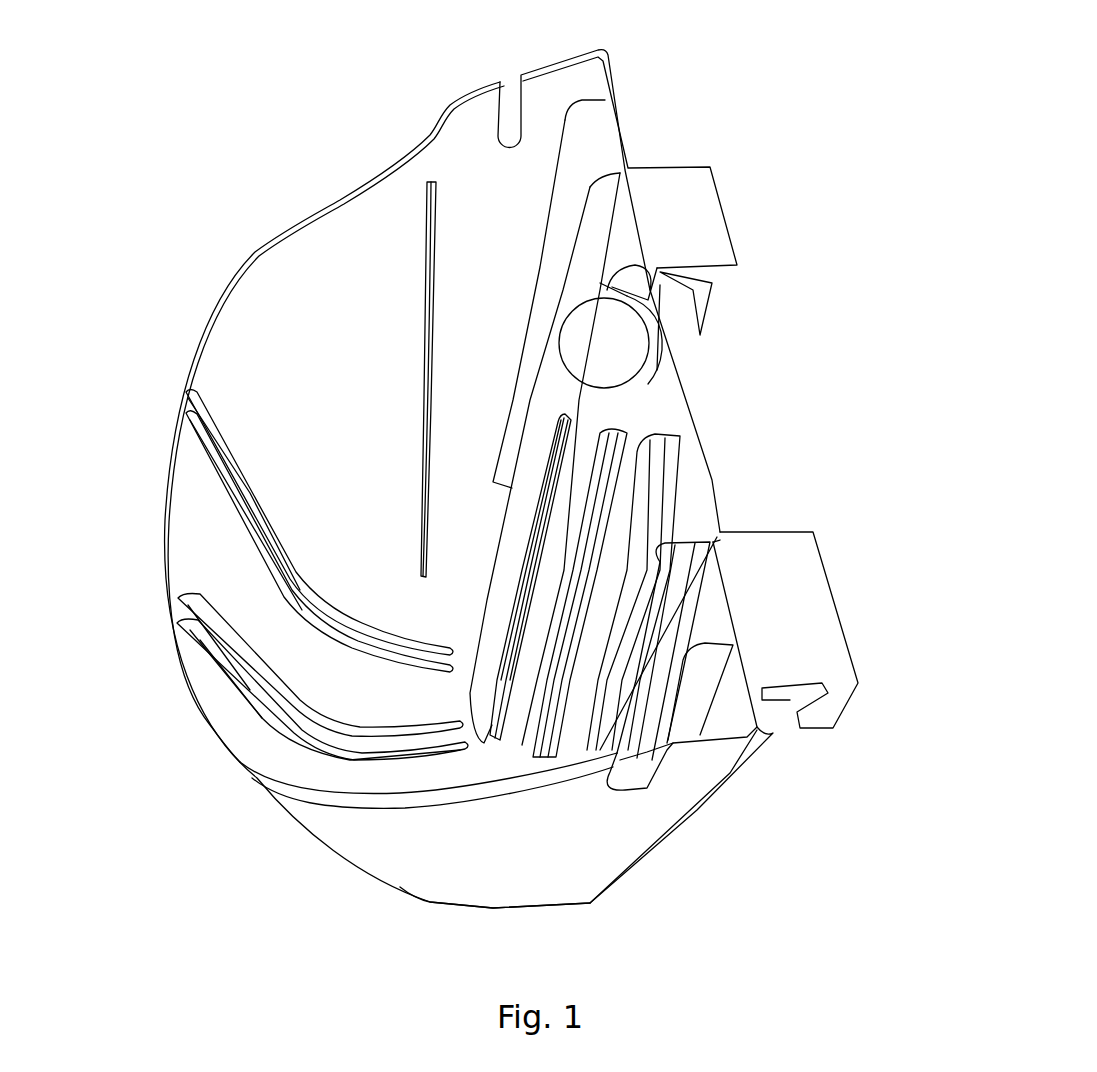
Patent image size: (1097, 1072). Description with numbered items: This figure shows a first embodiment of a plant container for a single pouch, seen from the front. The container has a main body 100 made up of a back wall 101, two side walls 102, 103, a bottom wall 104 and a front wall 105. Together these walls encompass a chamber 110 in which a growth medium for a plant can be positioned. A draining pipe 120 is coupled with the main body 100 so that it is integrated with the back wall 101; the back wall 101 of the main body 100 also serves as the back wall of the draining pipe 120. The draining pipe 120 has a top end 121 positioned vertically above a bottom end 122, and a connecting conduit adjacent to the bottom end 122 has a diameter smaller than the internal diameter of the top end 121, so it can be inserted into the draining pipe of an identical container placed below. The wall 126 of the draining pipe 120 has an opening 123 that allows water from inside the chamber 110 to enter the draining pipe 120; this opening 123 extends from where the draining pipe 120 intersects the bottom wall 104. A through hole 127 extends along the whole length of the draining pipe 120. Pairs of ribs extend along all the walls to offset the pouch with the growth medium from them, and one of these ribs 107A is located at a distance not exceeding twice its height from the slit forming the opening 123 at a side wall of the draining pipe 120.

The main body 100 is at (283, 172).
The back wall 101 is at (623, 148).
The side wall 102 is at (305, 267).
The side wall 103 is at (633, 833).
The bottom wall 104 is at (433, 690).
The front wall 105 is at (185, 486).
The rib 107A is at (642, 502).
The chamber 110 is at (375, 383).
The draining pipe 120 is at (530, 495).
The top end 121 is at (653, 328).
The bottom end 122 is at (507, 713).
The opening 123 is at (595, 412).
The wall 126 is at (545, 393).
The through hole 127 is at (605, 338).